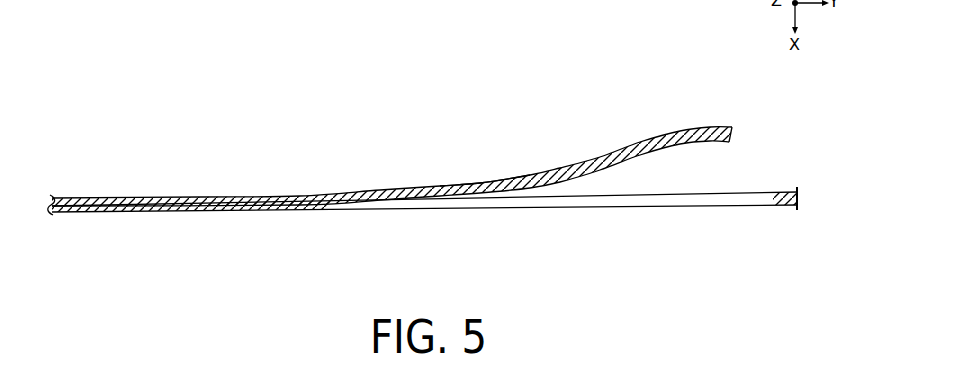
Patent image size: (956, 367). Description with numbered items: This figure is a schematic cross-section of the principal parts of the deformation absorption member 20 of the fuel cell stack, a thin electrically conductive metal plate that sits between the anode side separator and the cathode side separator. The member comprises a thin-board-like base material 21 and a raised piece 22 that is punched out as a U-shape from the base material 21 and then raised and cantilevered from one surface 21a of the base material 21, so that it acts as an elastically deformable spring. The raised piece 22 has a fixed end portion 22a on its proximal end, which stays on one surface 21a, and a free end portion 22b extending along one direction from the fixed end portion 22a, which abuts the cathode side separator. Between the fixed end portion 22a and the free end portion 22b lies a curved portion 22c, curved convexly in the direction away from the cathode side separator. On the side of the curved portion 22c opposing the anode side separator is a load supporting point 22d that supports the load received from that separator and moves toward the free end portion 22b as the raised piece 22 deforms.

The deformation absorption member 20 is at (70, 8).
The base material 21 is at (740, 192).
The one surface of the base material 21a is at (785, 192).
The raised piece 22 is at (573, 165).
The fixed end portion 22a is at (290, 198).
The free end portion 22b is at (732, 127).
The curved portion 22c is at (480, 185).
The load supporting point 22d is at (297, 213).